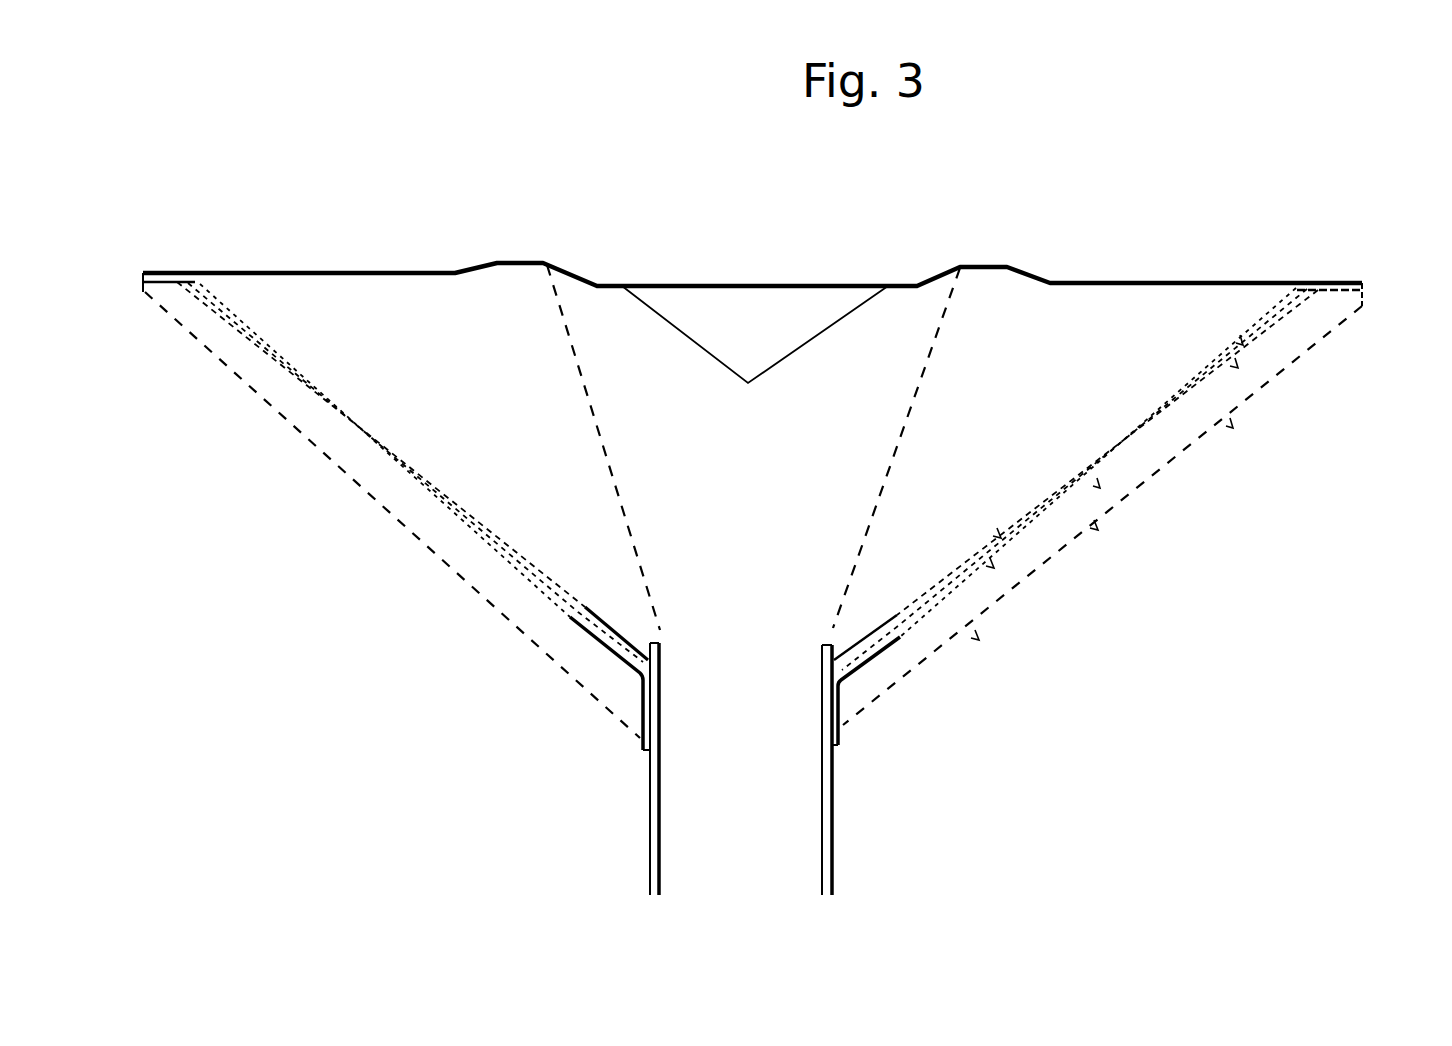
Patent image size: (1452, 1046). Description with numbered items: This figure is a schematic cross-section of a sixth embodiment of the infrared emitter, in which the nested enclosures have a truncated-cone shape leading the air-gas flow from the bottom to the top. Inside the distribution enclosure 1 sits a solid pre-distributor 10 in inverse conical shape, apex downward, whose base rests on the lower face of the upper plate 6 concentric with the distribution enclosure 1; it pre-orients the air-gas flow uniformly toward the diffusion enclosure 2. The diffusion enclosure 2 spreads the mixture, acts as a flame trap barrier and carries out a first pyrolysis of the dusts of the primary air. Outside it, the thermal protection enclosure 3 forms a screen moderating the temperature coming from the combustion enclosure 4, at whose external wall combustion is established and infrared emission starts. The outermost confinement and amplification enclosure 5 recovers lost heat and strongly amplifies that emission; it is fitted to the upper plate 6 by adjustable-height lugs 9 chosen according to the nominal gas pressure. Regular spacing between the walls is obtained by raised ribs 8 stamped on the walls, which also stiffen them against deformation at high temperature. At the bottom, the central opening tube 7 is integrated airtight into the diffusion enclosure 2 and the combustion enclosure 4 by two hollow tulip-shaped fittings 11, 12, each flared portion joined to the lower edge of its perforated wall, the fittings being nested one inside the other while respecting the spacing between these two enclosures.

The distribution enclosure 1 is at (608, 468).
The diffusion enclosure 2 is at (290, 352).
The thermal protection enclosure 3 is at (352, 420).
The combustion enclosure 4 is at (437, 502).
The confinement and amplification enclosure 5 is at (452, 556).
The upper plate 6 is at (1108, 279).
The central opening tube 7 is at (648, 768).
The raised ribs 8 is at (1100, 486).
The adjustable-height lugs 9 is at (1345, 279).
The pre-distributor 10 is at (723, 366).
The tulip-shaped fitting 11 is at (895, 620).
The tulip-shaped fitting 12 is at (867, 665).